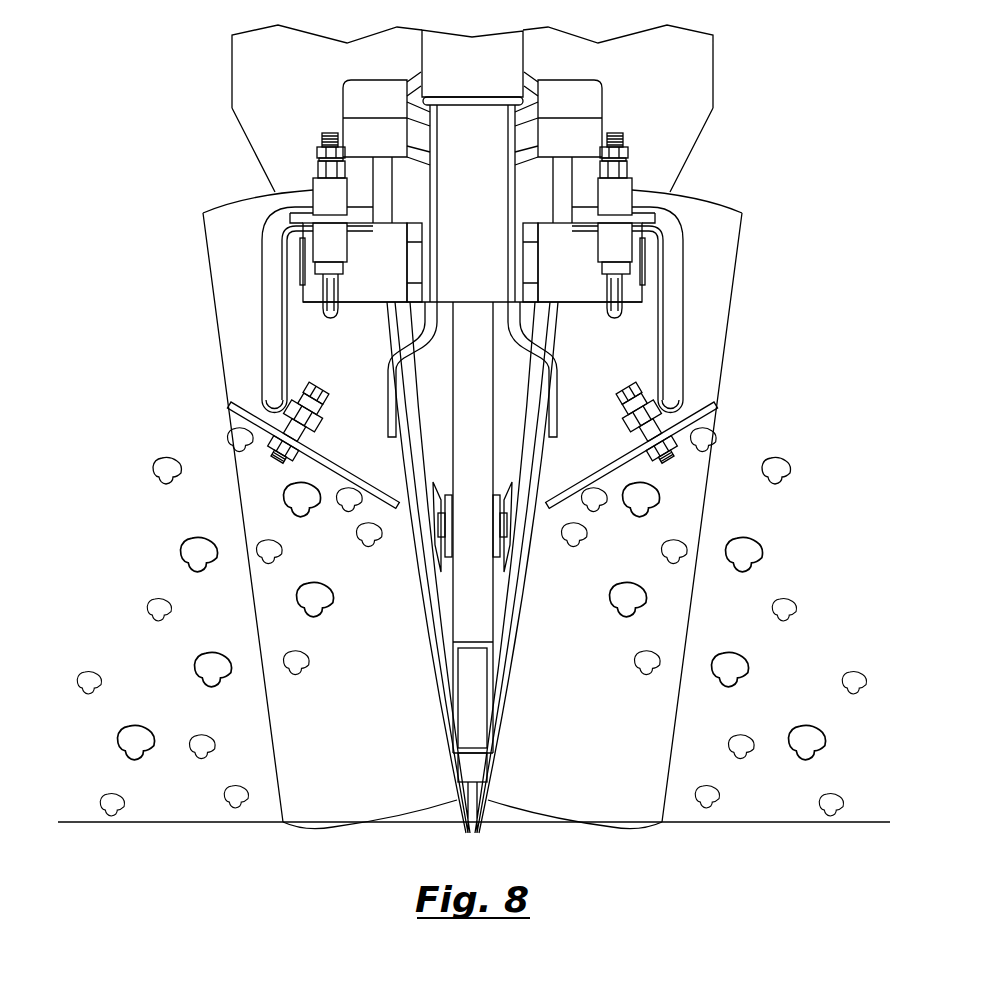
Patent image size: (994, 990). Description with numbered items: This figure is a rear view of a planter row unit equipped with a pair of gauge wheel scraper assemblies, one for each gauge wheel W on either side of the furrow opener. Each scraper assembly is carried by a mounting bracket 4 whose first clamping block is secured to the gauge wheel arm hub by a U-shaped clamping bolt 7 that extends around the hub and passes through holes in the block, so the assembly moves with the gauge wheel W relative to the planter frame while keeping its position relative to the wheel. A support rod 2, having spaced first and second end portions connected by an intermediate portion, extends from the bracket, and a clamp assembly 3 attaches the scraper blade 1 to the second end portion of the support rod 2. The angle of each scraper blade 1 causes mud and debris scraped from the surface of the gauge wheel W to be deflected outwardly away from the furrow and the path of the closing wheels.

The scraper blade 1 is at (330, 460).
The support rod 2 is at (270, 328).
The clamp assembly 3 is at (257, 397).
The mounting bracket 4 is at (322, 190).
The U-shaped clamping bolt 7 is at (330, 302).
The gauge wheel W is at (227, 258).